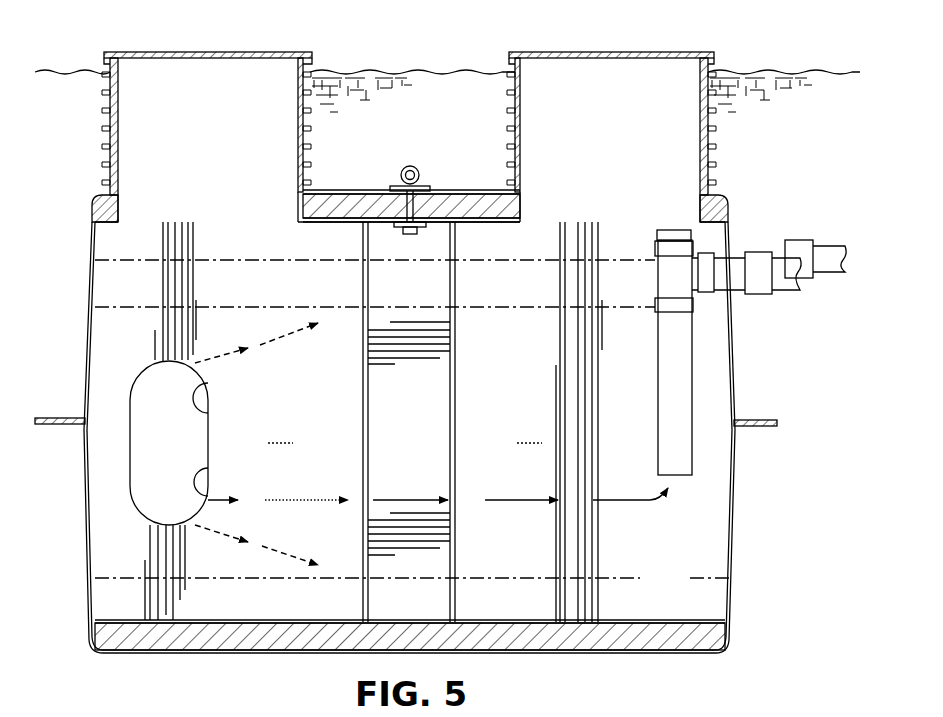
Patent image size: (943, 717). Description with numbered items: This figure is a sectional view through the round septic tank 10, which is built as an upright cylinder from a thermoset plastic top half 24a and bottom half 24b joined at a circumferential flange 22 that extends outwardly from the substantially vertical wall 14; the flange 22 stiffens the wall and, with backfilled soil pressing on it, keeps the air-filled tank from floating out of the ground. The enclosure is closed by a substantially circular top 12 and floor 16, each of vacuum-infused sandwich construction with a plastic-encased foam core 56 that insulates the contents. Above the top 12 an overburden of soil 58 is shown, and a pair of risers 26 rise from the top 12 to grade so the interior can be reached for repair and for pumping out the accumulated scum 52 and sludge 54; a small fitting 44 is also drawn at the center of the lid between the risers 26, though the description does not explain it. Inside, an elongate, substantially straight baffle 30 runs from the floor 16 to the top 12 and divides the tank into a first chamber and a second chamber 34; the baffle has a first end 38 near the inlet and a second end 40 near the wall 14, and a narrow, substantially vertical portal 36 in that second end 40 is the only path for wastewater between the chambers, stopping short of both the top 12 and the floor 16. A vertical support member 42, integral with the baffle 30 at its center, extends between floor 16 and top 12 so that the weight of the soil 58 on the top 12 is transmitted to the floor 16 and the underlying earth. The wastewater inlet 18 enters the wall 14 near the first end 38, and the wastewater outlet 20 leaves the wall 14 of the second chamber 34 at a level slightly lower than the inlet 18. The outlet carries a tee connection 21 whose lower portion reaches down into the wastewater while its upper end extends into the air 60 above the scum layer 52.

The septic tank 10 is at (440, 382).
The top 12 is at (472, 191).
The wall 14 is at (88, 297).
The floor 16 is at (559, 654).
The wastewater inlet 18 is at (800, 240).
The wastewater outlet 20 is at (759, 295).
The tee connection 21 is at (658, 393).
The circumferential flange 22 is at (54, 418).
The top half 24a is at (732, 352).
The bottom half 24b is at (732, 516).
The risers 26 is at (108, 124).
The baffle 30 is at (405, 431).
The second chamber 34 is at (688, 535).
The portal 36 is at (196, 406).
The first end 38 is at (716, 470).
The second end 40 is at (96, 468).
The vertical support member 42 is at (362, 375).
The eye bolt 44 is at (408, 166).
The scum 52 is at (298, 259).
The sludge 54 is at (620, 578).
The foam core 56 is at (104, 204).
The soil 58 is at (410, 72).
The air 60 is at (115, 238).